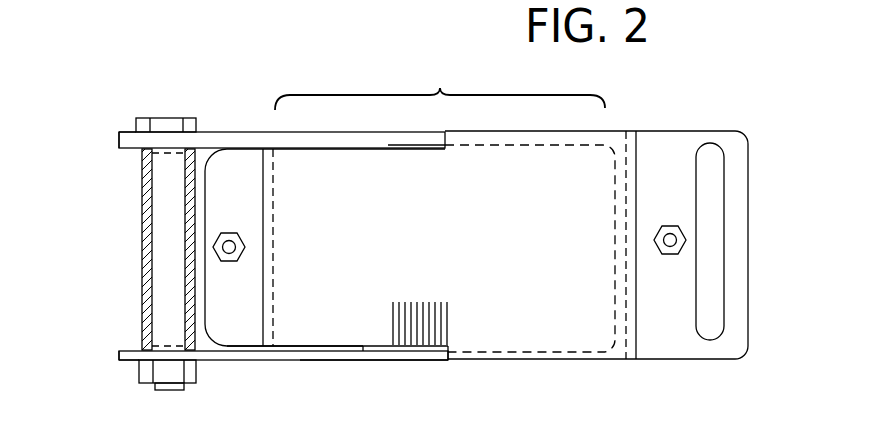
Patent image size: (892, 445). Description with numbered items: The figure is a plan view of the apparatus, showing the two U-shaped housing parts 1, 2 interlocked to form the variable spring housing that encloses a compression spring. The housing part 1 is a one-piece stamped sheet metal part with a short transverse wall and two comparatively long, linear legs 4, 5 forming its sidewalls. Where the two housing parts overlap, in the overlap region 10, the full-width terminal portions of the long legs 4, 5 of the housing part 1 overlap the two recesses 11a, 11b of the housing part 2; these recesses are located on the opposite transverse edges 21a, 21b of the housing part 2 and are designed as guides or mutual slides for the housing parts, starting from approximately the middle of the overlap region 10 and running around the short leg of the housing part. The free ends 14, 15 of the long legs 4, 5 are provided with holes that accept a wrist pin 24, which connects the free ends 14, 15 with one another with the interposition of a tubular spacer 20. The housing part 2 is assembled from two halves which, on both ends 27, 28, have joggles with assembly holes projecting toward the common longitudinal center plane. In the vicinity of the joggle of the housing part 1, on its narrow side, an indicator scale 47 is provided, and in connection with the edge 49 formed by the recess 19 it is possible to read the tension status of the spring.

The housing part 1 is at (333, 362).
The housing part 2 is at (391, 236).
The long leg 4 is at (240, 130).
The long leg 5 is at (243, 363).
The overlap region 10 is at (440, 84).
The recess 11a is at (390, 141).
The recess 11b is at (364, 352).
The free end 14 is at (113, 130).
The free end 15 is at (118, 362).
The recess 19 is at (507, 358).
The tubular spacer 20 is at (140, 297).
The transverse edge 21a is at (320, 152).
The transverse edge 21b is at (312, 343).
The wrist pin 24 is at (165, 114).
The end 27 is at (246, 211).
The end 28 is at (681, 314).
The indicator scale 47 is at (436, 320).
The edge 49 is at (446, 363).